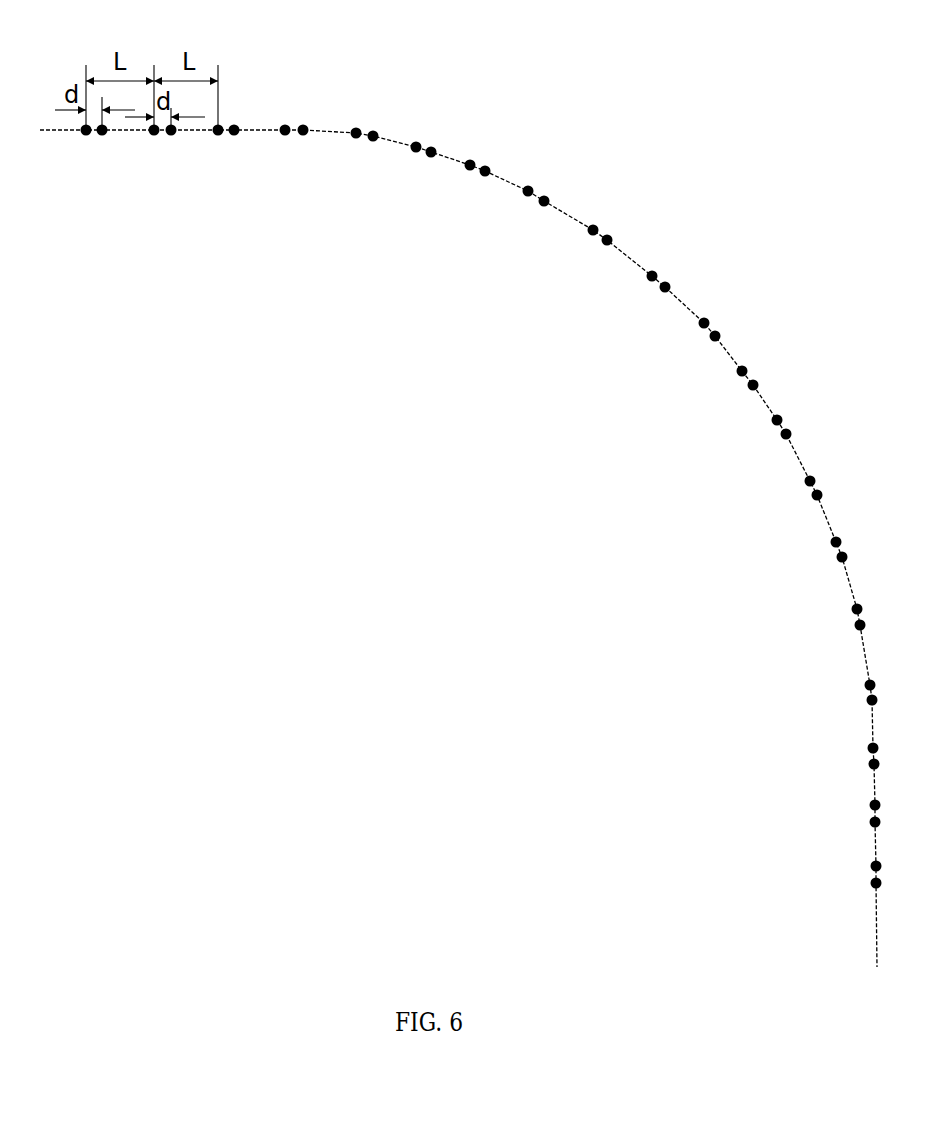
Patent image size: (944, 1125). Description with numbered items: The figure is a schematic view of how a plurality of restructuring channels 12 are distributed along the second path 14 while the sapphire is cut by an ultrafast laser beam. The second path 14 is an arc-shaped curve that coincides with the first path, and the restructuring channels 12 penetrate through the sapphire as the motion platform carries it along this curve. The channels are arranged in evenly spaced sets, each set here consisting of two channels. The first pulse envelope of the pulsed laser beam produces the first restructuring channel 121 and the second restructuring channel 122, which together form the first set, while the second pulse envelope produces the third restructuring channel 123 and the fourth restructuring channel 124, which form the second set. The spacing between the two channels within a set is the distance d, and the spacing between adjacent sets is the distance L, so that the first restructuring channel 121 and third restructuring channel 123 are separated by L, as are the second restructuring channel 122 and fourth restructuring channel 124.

The second path 14 is at (50, 42).
The restructuring channels 12 is at (127, 241).
The first restructuring channel 121 is at (86, 136).
The second restructuring channel 122 is at (102, 136).
The third restructuring channel 123 is at (154, 136).
The fourth restructuring channel 124 is at (171, 136).